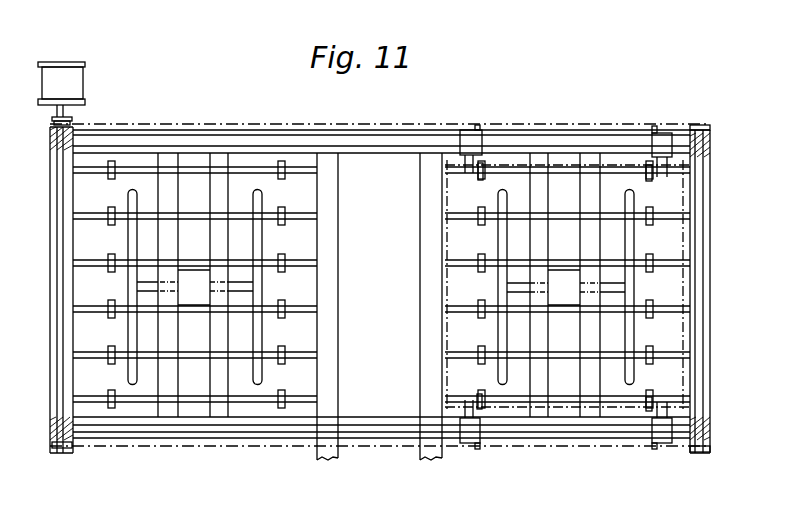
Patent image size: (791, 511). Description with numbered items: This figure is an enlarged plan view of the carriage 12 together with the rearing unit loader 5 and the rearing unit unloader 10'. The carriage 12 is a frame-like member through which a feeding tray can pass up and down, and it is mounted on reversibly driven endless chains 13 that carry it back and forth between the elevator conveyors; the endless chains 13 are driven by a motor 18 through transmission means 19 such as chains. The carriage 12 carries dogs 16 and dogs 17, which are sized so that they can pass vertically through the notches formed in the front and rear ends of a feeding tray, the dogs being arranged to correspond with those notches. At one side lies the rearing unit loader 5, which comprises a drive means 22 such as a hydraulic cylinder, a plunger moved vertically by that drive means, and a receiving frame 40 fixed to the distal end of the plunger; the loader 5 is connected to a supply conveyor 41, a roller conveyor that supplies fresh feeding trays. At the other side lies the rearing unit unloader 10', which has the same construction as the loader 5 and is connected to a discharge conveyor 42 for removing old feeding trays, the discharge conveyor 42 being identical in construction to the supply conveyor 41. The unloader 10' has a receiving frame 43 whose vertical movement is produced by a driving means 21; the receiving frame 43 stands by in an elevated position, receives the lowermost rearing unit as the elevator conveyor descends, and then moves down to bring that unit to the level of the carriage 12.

The motor 18 is at (77, 83).
The transmission means 19 is at (72, 120).
The endless chains 13 is at (351, 128).
The carriage 12 is at (468, 136).
The dogs 16 is at (467, 172).
The dogs 17 is at (472, 410).
The receiving frame 40 is at (128, 198).
The supply conveyor 41 is at (93, 262).
The discharge conveyor 42 is at (667, 314).
The rearing unit loader 5 is at (263, 252).
The drive means 22 is at (190, 274).
The driving means 21 is at (557, 275).
The receiving frame 43 is at (502, 249).
The rearing unit unloader 10' is at (567, 285).